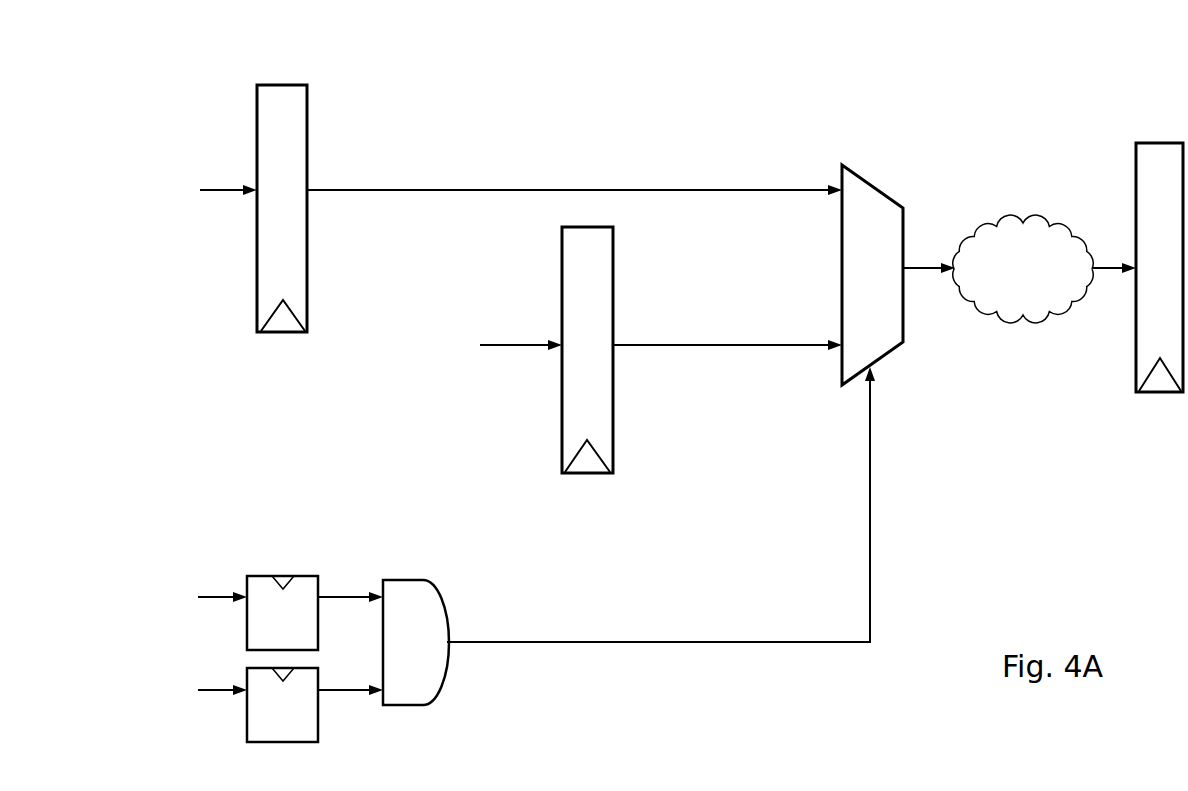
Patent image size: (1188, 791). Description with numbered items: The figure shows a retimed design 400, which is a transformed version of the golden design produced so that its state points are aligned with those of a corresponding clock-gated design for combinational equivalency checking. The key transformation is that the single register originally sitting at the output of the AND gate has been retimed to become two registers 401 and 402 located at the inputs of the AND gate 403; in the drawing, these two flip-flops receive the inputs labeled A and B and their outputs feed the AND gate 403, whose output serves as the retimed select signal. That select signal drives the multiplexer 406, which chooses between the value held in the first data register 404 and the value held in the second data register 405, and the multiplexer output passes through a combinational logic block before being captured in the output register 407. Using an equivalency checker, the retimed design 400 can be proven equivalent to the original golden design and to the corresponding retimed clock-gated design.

The retimed design 400 is at (712, 88).
The register 401 is at (297, 575).
The register 402 is at (305, 742).
The AND gate 403 is at (398, 575).
The D1 register 404 is at (283, 84).
The D0 register 405 is at (605, 226).
The multiplexer 406 is at (857, 170).
The P1 output register 407 is at (1178, 142).